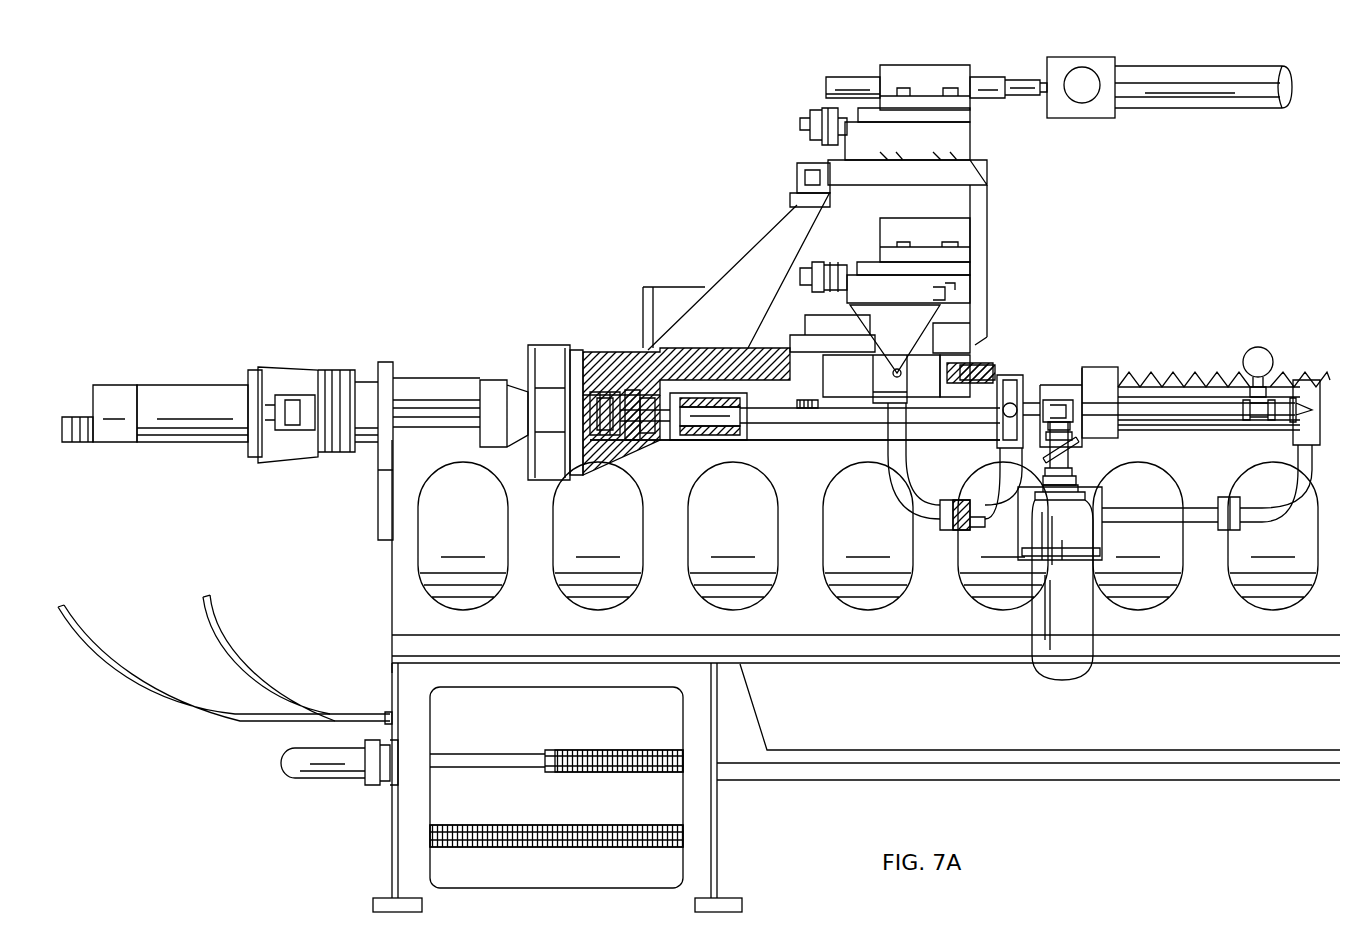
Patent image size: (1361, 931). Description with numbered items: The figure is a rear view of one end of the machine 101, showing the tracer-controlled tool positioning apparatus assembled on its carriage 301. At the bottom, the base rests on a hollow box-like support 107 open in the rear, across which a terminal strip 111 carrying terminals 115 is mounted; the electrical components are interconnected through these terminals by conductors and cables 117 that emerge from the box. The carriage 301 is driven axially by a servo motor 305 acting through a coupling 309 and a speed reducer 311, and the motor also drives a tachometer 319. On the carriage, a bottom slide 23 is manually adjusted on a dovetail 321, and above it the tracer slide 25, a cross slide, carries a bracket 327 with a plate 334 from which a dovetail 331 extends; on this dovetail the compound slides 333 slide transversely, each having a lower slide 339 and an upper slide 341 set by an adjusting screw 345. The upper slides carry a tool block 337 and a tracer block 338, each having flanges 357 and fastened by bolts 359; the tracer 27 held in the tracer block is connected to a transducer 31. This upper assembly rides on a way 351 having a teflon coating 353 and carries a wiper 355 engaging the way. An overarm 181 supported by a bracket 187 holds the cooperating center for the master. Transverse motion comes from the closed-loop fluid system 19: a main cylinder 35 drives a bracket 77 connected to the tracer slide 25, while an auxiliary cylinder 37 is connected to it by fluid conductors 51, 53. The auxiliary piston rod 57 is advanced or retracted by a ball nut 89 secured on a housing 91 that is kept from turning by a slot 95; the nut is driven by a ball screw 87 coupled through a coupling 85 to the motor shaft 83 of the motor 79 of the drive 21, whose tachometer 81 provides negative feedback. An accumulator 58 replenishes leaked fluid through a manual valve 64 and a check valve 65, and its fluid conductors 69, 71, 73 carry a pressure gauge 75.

The closed-loop fluid system 19 is at (948, 494).
The drive 21 is at (718, 444).
The bottom slide 23 is at (800, 348).
The tracer slide 25 is at (810, 330).
The tracer 27 is at (1018, 75).
The transducer 31 is at (852, 76).
The main cylinder 35 is at (938, 432).
The auxiliary cylinder 37 is at (1155, 388).
The fluid conductor 51 is at (1165, 500).
The fluid conductor 53 is at (920, 485).
The piston rod 57 is at (858, 428).
The accumulator 58 is at (1095, 672).
The manual valve 64 is at (1090, 468).
The check valve 65 is at (1010, 372).
The fluid conductor 69 is at (1075, 428).
The fluid conductor 71 is at (1048, 385).
The fluid conductor 73 is at (1215, 398).
The pressure gauge 75 is at (1255, 347).
The bracket 77 is at (915, 320).
The motor 79 is at (540, 346).
The tachometer 81 is at (480, 380).
The motor shaft 83 is at (575, 350).
The coupling 85 is at (600, 436).
The ball screw 87 is at (795, 425).
The ball nut 89 is at (710, 400).
The housing 91 is at (700, 440).
The slot 95 is at (818, 432).
The machine 101 is at (1213, 684).
The hollow box-like support 107 is at (395, 853).
The terminal strip 111 is at (510, 822).
The terminal 115 is at (620, 748).
The conductors and cables 117 is at (90, 648).
The overarm 181 is at (1195, 66).
The bracket 187 is at (1062, 68).
The carriage 301 is at (1005, 184).
The servo motor 305 is at (166, 380).
The coupling 309 is at (288, 395).
The speed reducer 311 is at (280, 362).
The tachometer 319 is at (118, 380).
The dovetail 321 is at (868, 385).
The bracket 327 is at (980, 260).
The dovetail 331 is at (900, 150).
The compound slide 333 is at (983, 128).
The plate 334 is at (978, 170).
The tool block 337 is at (930, 225).
The tracer block 338 is at (925, 63).
The lower slide 339 is at (952, 146).
The upper slide 341 is at (968, 120).
The adjusting screw 345 is at (800, 124).
The way 351 is at (805, 185).
The coating 353 is at (810, 160).
The wiper 355 is at (797, 175).
The flange 357 is at (935, 100).
The bolt 359 is at (965, 240).